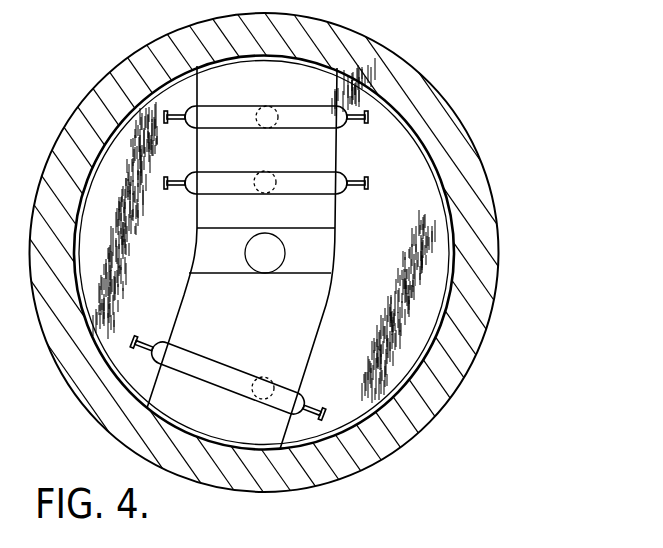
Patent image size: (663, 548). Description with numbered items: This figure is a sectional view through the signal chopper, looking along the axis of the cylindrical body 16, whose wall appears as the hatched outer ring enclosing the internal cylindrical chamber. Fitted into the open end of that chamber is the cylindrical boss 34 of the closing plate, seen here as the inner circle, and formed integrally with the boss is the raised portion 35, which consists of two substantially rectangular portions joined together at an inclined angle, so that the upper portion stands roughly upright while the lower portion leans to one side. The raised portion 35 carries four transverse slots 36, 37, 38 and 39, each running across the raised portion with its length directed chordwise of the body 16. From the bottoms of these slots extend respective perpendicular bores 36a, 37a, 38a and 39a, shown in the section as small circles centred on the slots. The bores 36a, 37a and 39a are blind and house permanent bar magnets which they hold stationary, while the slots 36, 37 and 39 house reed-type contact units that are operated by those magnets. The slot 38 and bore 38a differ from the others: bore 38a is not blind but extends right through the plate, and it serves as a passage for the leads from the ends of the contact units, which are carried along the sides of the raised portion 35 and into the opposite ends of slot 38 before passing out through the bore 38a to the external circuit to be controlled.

The cylindrical body 16 is at (422, 113).
The cylindrical boss 34 is at (407, 175).
The raised portion 35 is at (198, 213).
The transverse slot 36 is at (314, 111).
The perpendicular bore 36a is at (261, 110).
The transverse slot 37 is at (305, 192).
The perpendicular bore 37a is at (261, 189).
The transverse slot 38 is at (309, 233).
The bore 38a is at (243, 254).
The transverse slot 39 is at (225, 369).
The perpendicular bore 39a is at (264, 378).